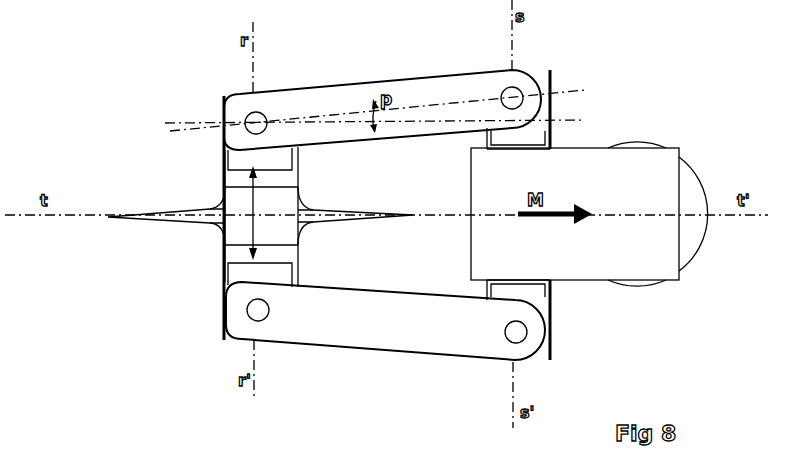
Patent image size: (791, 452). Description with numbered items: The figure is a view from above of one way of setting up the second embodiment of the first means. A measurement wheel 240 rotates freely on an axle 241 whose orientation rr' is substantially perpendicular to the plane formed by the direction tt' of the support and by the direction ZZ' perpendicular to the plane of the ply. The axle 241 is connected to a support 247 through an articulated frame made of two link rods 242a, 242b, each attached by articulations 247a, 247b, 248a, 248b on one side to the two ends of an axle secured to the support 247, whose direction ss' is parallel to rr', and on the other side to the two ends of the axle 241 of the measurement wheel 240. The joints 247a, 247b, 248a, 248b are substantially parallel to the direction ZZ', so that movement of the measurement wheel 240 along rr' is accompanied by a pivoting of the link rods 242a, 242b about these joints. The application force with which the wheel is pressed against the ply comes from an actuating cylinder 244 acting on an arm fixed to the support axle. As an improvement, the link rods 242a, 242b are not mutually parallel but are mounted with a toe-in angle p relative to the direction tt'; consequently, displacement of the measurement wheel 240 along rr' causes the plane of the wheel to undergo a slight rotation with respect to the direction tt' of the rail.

The measurement wheel 240 is at (147, 213).
The axle 241 is at (240, 253).
The link rod 242a is at (333, 328).
The link rod 242b is at (323, 100).
The actuating cylinder 244 is at (692, 233).
The support 247 is at (590, 167).
The articulation 247a is at (258, 310).
The articulation 247b is at (256, 122).
The articulation 248a is at (514, 333).
The articulation 248b is at (512, 98).